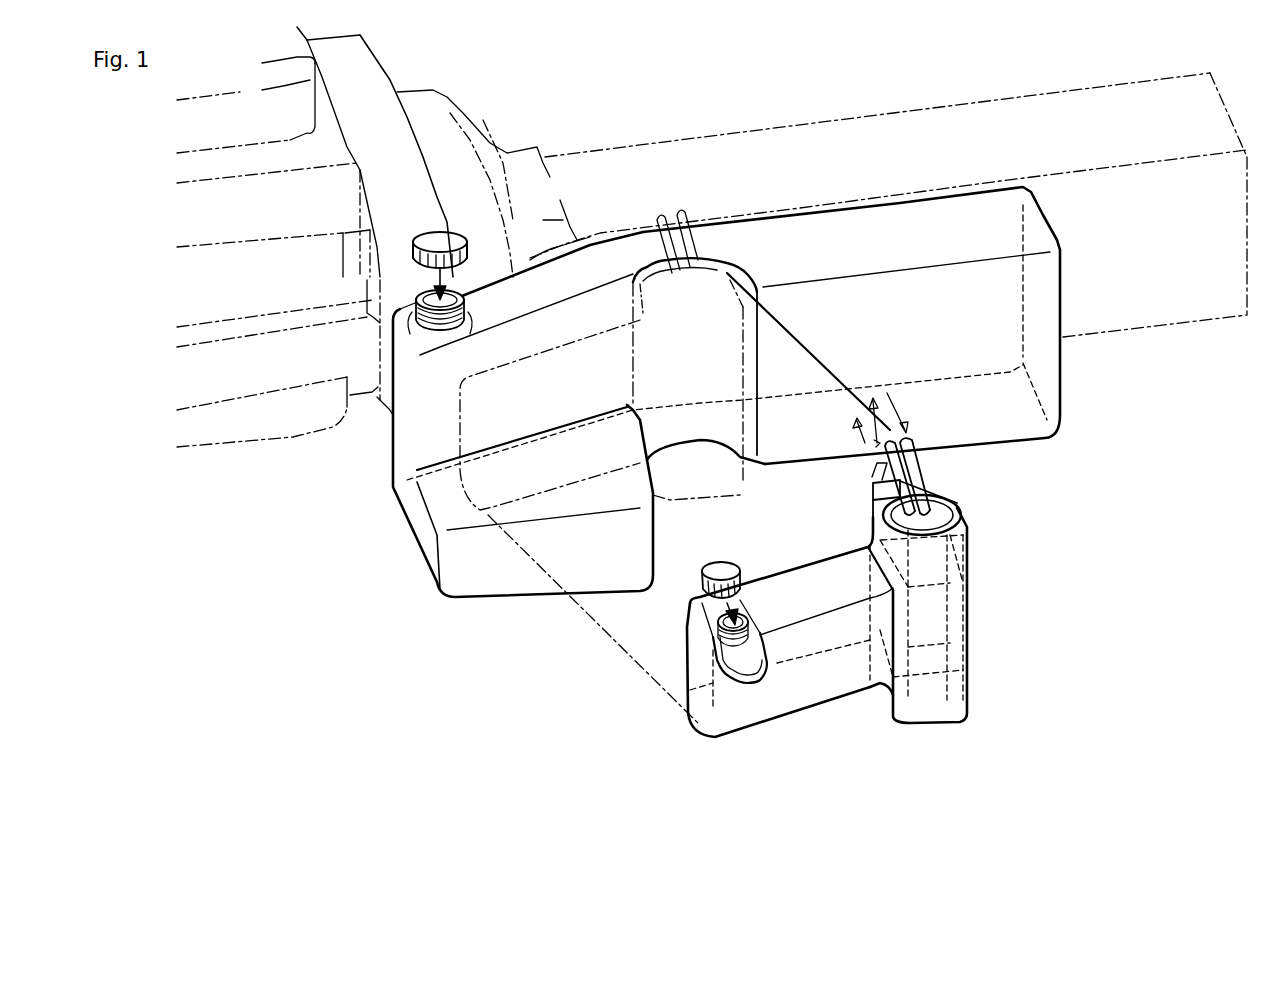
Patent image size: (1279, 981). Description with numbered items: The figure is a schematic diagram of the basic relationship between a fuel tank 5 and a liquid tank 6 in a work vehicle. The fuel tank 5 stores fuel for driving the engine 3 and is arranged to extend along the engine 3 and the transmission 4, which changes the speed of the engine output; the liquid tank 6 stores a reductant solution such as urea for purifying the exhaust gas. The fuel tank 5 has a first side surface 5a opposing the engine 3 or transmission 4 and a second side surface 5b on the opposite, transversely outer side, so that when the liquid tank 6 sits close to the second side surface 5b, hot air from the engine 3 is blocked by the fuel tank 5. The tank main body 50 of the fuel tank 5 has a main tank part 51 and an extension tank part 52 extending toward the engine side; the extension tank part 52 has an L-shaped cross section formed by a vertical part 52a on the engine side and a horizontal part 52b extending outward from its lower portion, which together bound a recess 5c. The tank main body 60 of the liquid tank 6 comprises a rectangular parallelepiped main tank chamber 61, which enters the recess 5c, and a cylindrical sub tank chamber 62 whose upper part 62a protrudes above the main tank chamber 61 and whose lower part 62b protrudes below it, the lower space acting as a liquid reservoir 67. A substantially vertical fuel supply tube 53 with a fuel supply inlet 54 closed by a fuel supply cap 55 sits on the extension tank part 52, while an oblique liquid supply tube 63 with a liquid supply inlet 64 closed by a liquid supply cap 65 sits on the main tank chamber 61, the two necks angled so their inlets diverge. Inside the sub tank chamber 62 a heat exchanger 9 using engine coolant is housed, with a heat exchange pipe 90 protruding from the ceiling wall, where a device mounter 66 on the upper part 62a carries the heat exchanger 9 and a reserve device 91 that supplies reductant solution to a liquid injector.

The engine 3 is at (235, 455).
The transmission 4 is at (600, 147).
The fuel tank 5 is at (1077, 275).
The first side surface 5a is at (793, 307).
The second side surface 5b is at (846, 344).
The recess 5c is at (440, 483).
The tank main body 50 is at (727, 342).
The main tank part 51 is at (1067, 372).
The extension tank part 52 is at (497, 595).
The vertical part 52a is at (395, 445).
The horizontal part 52b is at (425, 548).
The fuel supply tube 53 is at (468, 306).
The fuel supply inlet 54 is at (458, 293).
The fuel supply cap 55 is at (428, 228).
The liquid tank 6 is at (1000, 618).
The tank main body 60 is at (780, 675).
The main tank chamber 61 is at (810, 712).
The sub tank chamber 62 is at (945, 727).
The upper part 62a is at (975, 548).
The lower part 62b is at (972, 706).
The liquid supply tube 63 is at (712, 663).
The liquid supply inlet 64 is at (745, 610).
The liquid supply cap 65 is at (712, 566).
The device mounter 66 is at (960, 518).
The liquid reservoir 67 is at (907, 727).
The heat exchanger 9 is at (941, 698).
The heat exchange pipe 90 is at (915, 452).
The reserve device 91 is at (872, 489).